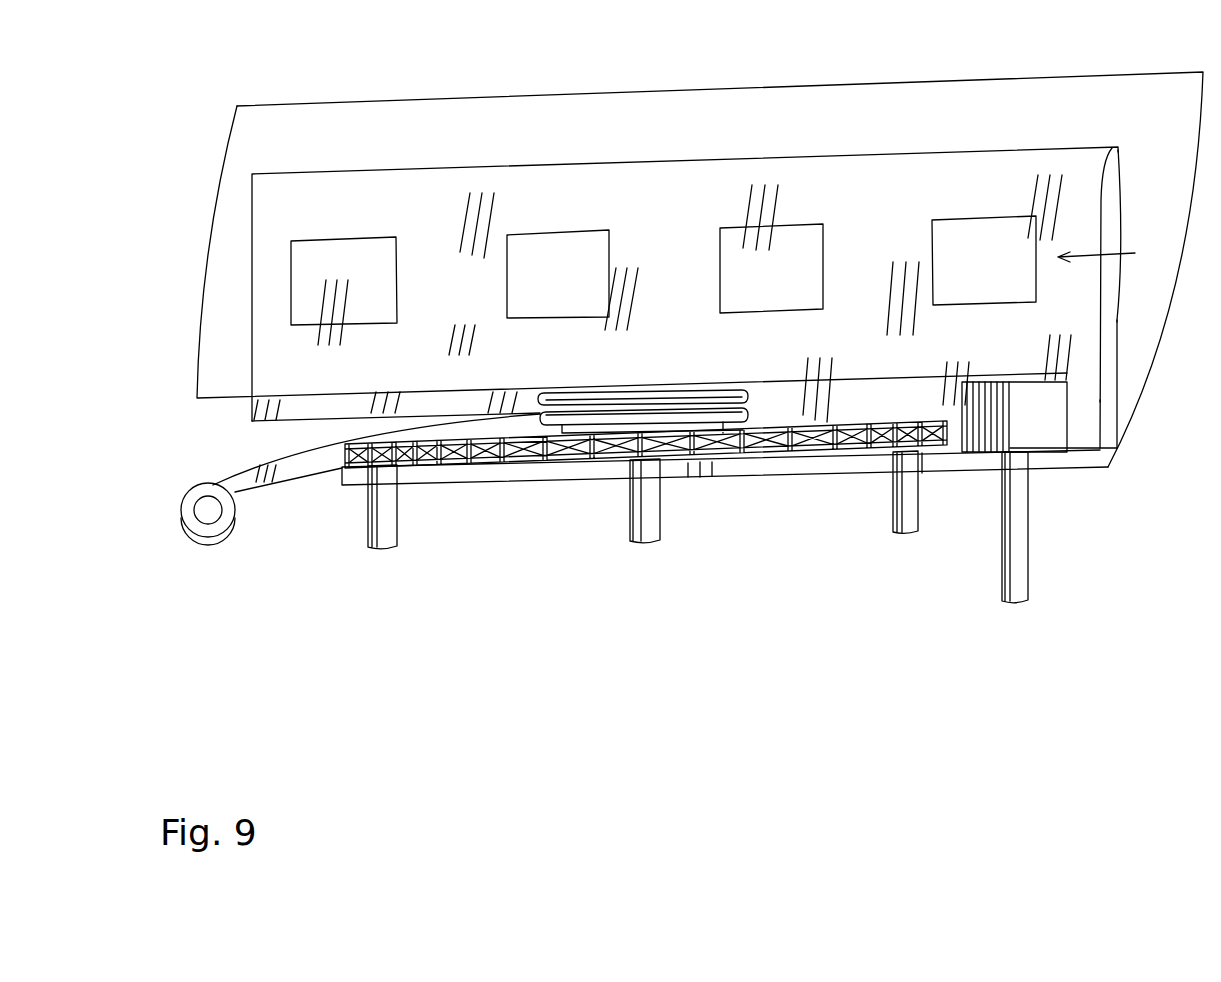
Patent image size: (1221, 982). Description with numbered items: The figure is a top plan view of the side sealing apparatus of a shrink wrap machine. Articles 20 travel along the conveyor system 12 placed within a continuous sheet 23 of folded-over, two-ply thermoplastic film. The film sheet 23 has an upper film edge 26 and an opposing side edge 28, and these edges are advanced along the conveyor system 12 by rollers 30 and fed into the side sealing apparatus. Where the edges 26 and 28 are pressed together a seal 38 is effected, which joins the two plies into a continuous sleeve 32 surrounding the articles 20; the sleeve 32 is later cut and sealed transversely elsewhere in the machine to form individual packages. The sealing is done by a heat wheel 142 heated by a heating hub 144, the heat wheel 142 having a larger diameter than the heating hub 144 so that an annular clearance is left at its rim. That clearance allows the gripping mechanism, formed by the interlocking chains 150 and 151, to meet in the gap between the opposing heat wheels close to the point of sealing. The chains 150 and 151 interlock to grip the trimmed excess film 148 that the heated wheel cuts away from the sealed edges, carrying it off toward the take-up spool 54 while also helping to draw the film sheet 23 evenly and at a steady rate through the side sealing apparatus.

The conveyor system 12 is at (922, 97).
The articles 20 is at (380, 243).
The continuous sheet of folded-over two-ply film 23 is at (1080, 177).
The upper film edge 26 is at (1085, 362).
The film side edge 28 is at (1113, 418).
The rollers 30 is at (1048, 425).
The continuous sleeve 32 is at (240, 130).
The seal 38 is at (273, 417).
The take-up spool 54 is at (187, 537).
The heat wheel 142 is at (748, 420).
The heating hub 144 is at (605, 428).
The trimmed excess film 148 is at (322, 473).
The interlocking chain 150 is at (473, 462).
The interlocking chain 151 is at (532, 467).